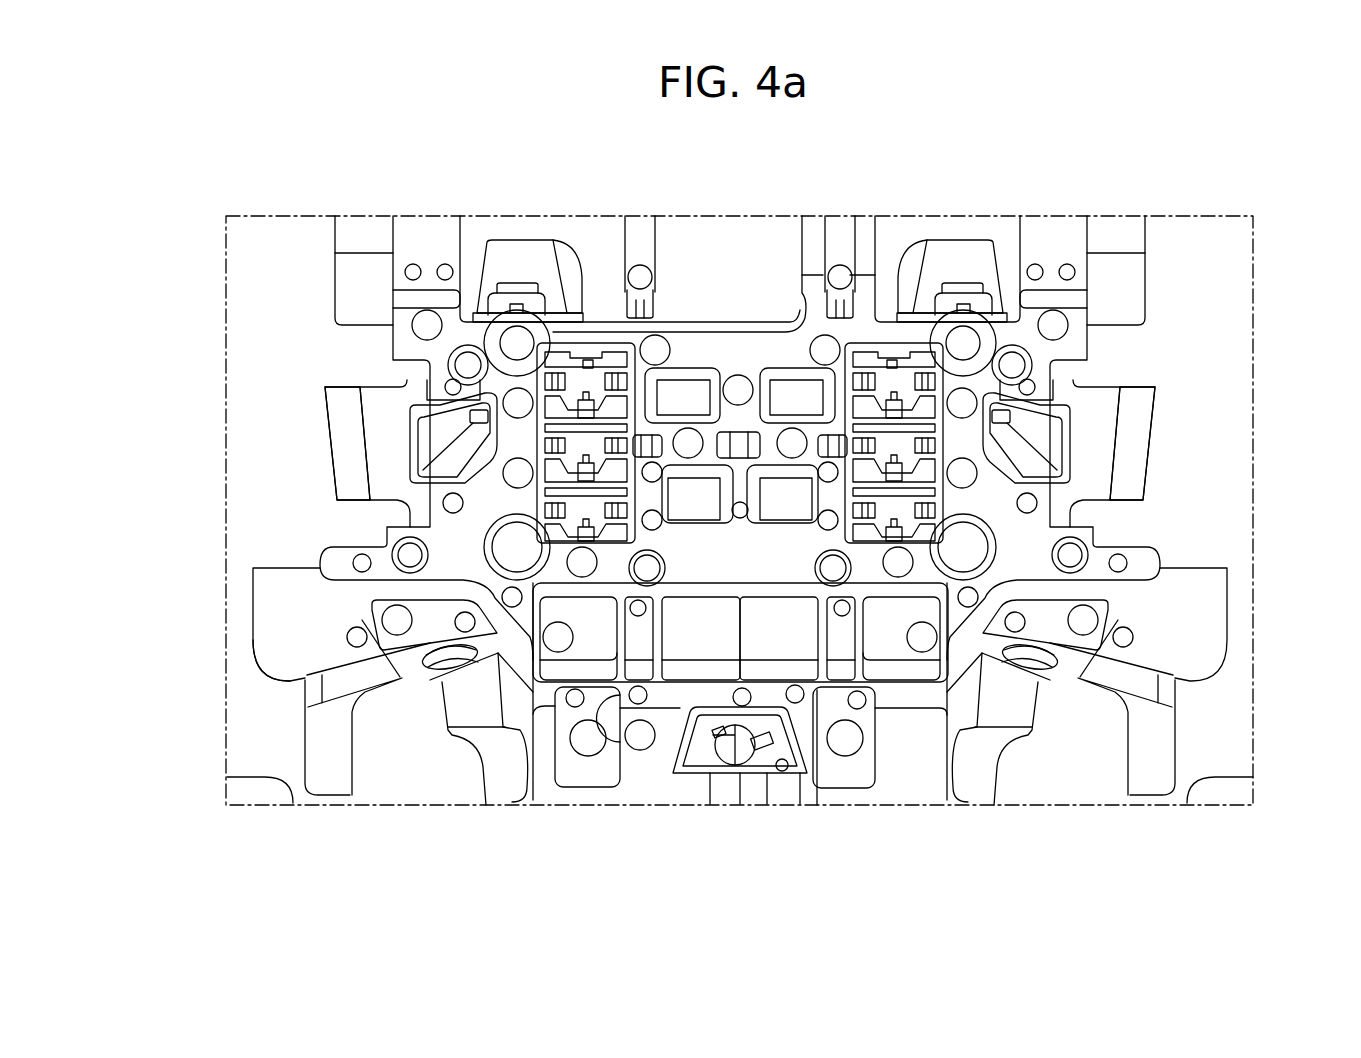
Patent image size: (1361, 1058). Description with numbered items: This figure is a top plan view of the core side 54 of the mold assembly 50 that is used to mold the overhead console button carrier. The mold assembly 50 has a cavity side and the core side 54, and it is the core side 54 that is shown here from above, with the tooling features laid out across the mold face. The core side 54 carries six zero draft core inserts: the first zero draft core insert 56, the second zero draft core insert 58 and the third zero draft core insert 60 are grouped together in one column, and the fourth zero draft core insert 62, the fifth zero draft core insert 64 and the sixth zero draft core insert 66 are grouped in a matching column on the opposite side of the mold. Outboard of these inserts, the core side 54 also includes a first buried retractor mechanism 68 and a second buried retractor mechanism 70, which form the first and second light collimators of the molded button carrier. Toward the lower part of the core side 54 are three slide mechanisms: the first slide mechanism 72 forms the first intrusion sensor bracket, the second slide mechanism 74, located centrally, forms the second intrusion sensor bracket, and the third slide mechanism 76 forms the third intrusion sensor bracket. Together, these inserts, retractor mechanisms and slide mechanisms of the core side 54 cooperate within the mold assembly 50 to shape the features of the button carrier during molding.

The mold assembly 50 is at (1040, 182).
The core side 54 is at (292, 722).
The first zero draft core insert 56 is at (581, 375).
The second zero draft core insert 58 is at (577, 447).
The third zero draft core insert 60 is at (582, 512).
The fourth zero draft core insert 62 is at (885, 375).
The fifth zero draft core insert 64 is at (898, 447).
The sixth zero draft core insert 66 is at (898, 508).
The first buried retractor mechanism 68 is at (378, 442).
The second buried retractor mechanism 70 is at (1098, 432).
The first slide mechanism 72 is at (470, 717).
The second slide mechanism 74 is at (725, 788).
The third slide mechanism 76 is at (1003, 717).